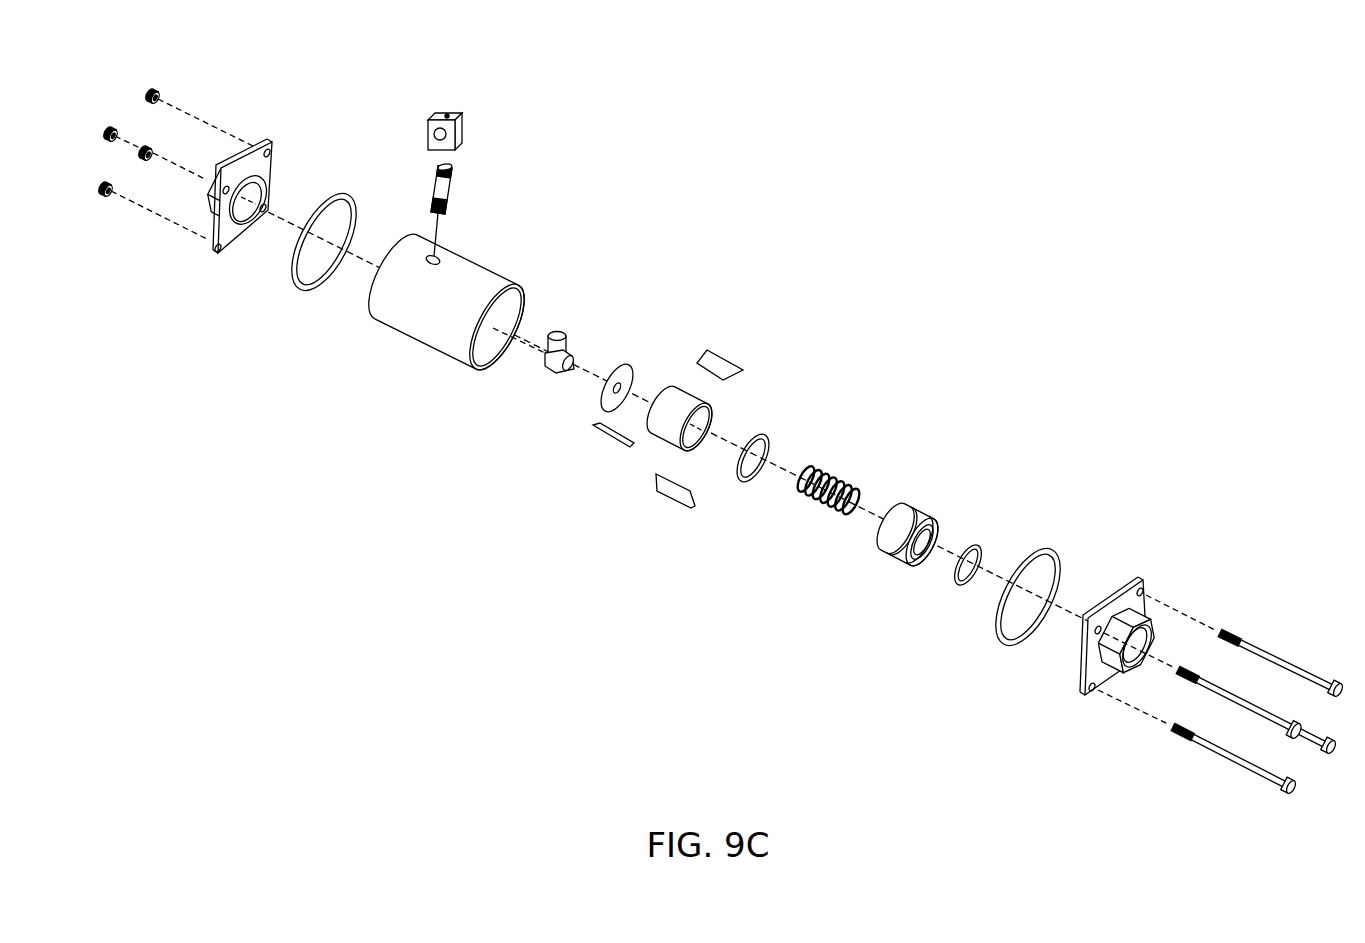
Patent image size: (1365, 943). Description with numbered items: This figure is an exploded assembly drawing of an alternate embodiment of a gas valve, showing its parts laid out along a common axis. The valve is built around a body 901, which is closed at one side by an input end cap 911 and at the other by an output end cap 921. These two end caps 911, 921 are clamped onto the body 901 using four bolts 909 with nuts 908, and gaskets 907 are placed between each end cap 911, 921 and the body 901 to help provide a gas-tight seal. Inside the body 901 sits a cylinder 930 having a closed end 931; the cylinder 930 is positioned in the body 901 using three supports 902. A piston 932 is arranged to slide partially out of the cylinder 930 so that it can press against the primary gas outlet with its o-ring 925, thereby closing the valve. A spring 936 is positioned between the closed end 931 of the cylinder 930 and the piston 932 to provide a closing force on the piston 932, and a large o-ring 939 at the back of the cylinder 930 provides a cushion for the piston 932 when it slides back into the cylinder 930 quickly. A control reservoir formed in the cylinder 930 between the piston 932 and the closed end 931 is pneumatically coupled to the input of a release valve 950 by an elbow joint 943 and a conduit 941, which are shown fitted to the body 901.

The body 901 is at (488, 270).
The supports 902 is at (728, 348).
The gaskets 907 is at (298, 274).
The nuts 908 is at (190, 91).
The bolts 909 is at (1178, 776).
The input end cap 911 is at (271, 142).
The output end cap 921 is at (1142, 580).
The o-ring 925 is at (978, 548).
The cylinder 930 is at (667, 435).
The closed end 931 is at (627, 367).
The piston 932 is at (917, 510).
The spring 936 is at (835, 487).
The large o-ring 939 is at (760, 433).
The conduit 941 is at (452, 177).
The elbow joint 943 is at (548, 367).
The release valve 950 is at (457, 112).